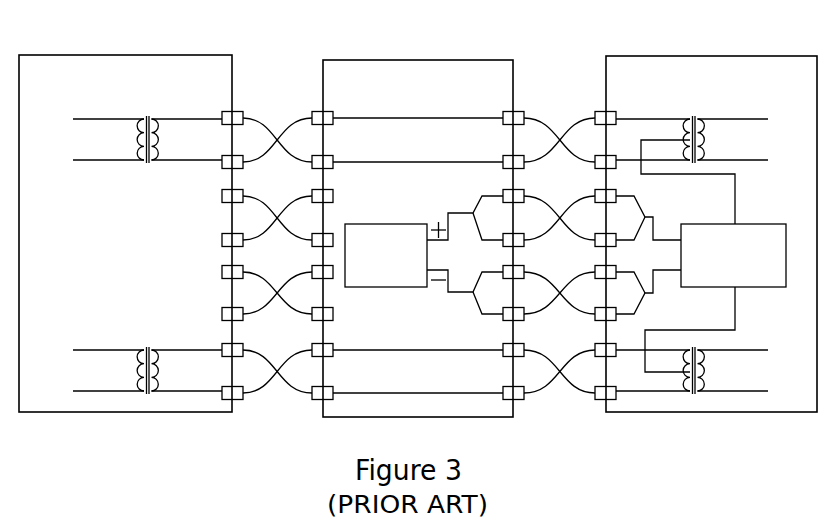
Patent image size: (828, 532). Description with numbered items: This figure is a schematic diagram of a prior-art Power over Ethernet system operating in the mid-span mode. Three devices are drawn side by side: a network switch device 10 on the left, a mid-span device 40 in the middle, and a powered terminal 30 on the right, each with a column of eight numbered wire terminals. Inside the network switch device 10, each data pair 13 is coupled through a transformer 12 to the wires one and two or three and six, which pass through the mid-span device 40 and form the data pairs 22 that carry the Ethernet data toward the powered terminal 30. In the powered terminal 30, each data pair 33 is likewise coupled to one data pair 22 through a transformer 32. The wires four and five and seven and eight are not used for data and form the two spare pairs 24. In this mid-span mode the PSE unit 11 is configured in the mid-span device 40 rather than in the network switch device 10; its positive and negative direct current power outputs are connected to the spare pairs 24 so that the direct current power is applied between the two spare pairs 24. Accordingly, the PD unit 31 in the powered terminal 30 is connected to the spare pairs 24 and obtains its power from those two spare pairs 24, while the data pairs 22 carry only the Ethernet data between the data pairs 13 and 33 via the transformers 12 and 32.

The network switch device 10 is at (165, 55).
The PSE unit 11 is at (382, 224).
The transformer 12 is at (153, 118).
The data pair 13 is at (80, 118).
The data pair 22 is at (538, 123).
The spare pair 24 is at (537, 200).
The powered terminal 30 is at (755, 56).
The PD unit 31 is at (752, 224).
The transformer 32 is at (688, 120).
The data pair 33 is at (756, 118).
The mid-span device 40 is at (450, 60).